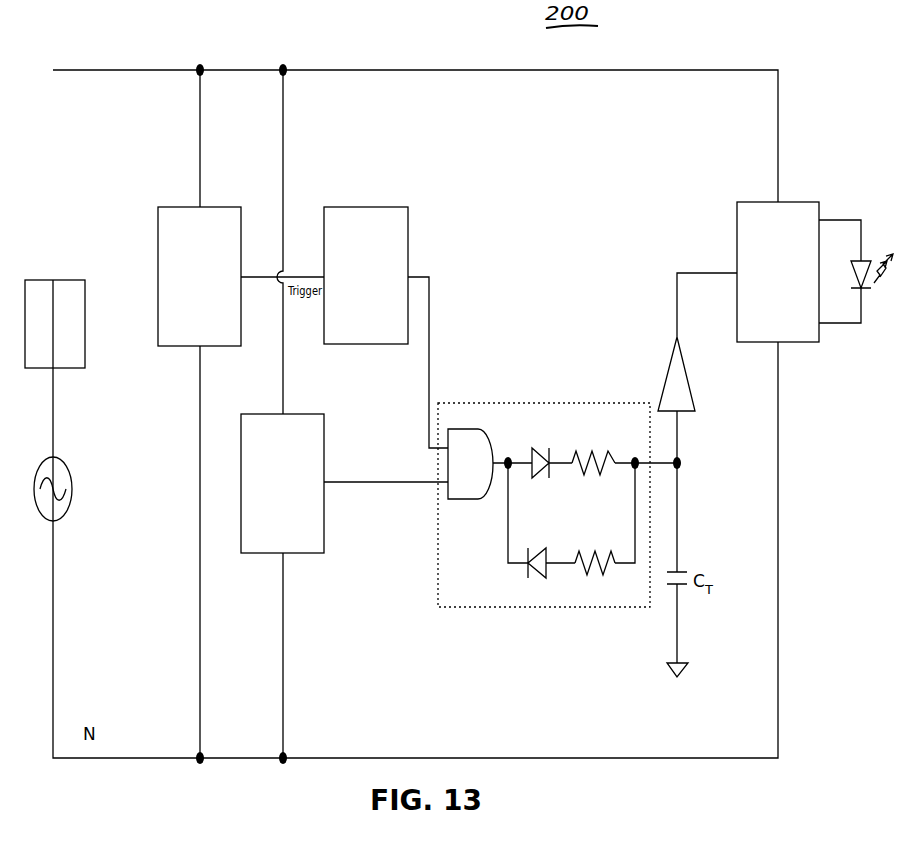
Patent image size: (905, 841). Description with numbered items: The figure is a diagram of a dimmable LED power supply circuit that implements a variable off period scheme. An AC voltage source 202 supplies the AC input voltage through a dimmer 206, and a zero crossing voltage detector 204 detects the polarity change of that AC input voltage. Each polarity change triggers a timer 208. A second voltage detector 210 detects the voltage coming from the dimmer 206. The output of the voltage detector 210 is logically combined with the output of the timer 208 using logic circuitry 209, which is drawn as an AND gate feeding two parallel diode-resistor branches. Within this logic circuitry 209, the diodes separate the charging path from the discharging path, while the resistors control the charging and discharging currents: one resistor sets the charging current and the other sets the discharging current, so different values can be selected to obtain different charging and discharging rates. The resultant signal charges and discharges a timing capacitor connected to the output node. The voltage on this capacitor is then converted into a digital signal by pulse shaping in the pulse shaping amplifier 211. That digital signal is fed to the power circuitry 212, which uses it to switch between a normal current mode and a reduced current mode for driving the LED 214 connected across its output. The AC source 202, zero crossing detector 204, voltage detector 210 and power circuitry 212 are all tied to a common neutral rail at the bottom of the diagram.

The AC voltage source 202 is at (64, 451).
The zero crossing voltage detector 204 is at (236, 203).
The dimmer 206 is at (65, 273).
The timer 208 is at (383, 200).
The logic circuitry 209 is at (574, 384).
The second voltage detector 210 is at (303, 410).
The pulse shaping amplifier 211 is at (698, 388).
The power circuitry 212 is at (817, 194).
The LED 214 is at (865, 253).